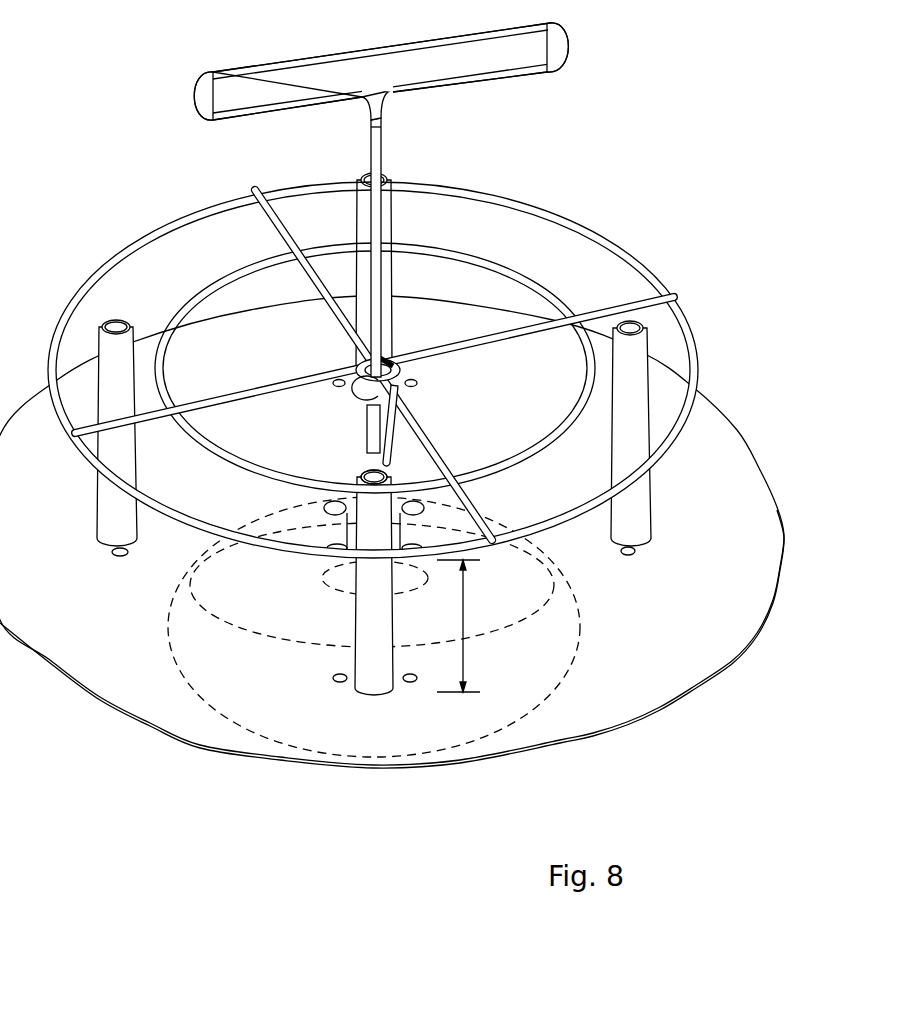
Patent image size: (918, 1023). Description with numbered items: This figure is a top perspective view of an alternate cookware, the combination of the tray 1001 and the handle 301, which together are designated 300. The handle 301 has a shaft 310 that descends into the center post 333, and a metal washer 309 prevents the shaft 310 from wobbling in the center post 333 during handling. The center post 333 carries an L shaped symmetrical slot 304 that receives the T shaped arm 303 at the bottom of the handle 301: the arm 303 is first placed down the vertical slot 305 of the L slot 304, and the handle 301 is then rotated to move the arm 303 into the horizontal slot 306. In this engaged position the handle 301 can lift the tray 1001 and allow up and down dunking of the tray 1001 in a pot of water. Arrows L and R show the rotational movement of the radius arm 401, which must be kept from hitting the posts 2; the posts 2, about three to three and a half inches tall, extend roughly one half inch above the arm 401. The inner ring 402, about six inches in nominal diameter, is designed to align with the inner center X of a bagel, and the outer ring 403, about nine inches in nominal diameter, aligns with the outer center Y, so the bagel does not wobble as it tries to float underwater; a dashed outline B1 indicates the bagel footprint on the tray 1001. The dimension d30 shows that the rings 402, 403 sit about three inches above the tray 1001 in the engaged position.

The cookware combination 300 is at (116, 30).
The handle 301 is at (393, 139).
The shaft 310 is at (380, 161).
The washer 309 is at (385, 372).
The L shaped symmetrical slot 304 is at (383, 420).
The vertical slot 305 is at (368, 407).
The T shaped arm 303 is at (369, 449).
The horizontal slot 306 is at (396, 444).
The center post 333 is at (357, 467).
The radius arm 401 is at (467, 498).
The inner ring 402 is at (484, 266).
The outer ring 403 is at (643, 267).
The post 2 is at (108, 495).
The tray 1001 is at (672, 664).
The circle B1 is at (273, 717).
The center of the inner ring of bagel X is at (366, 558).
The center of the outer ring of bagel Y is at (372, 585).
The right arrow R is at (455, 432).
The left arrow L is at (412, 468).
The height of the rings above the tray d30 is at (459, 626).